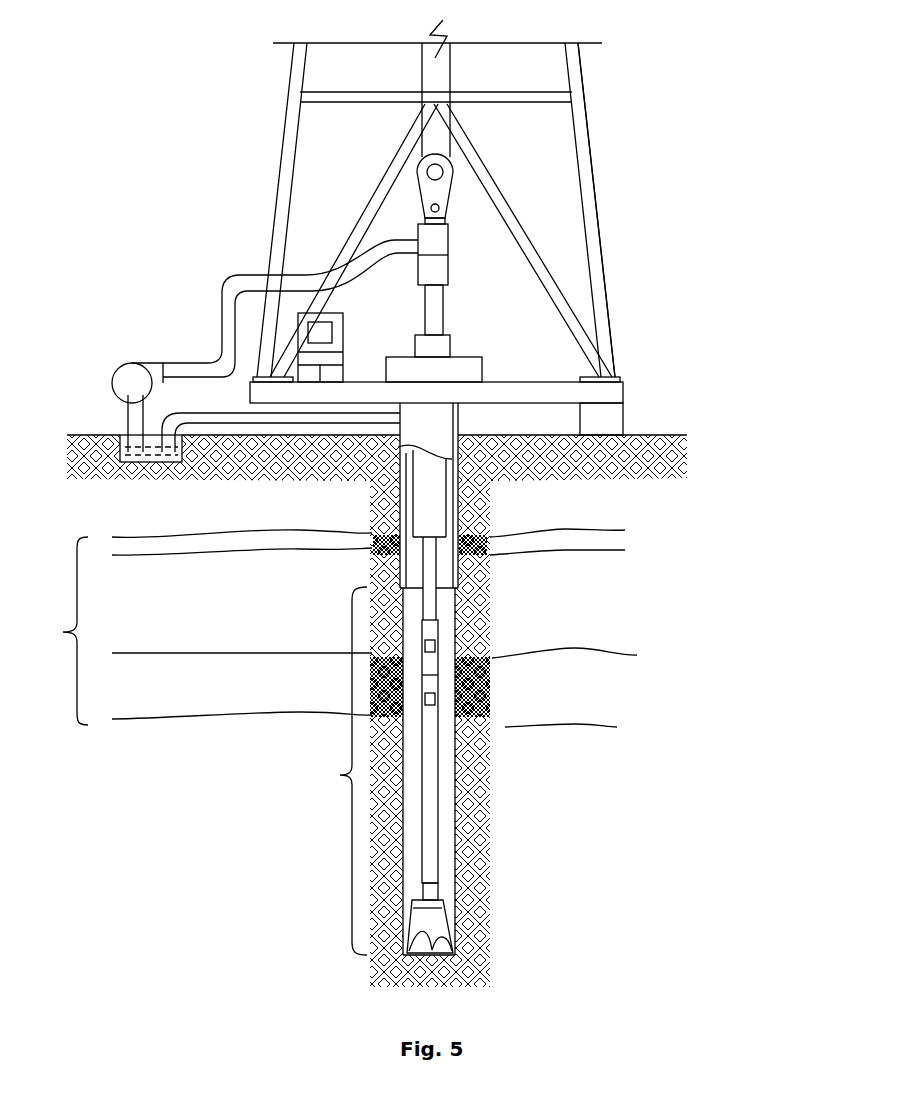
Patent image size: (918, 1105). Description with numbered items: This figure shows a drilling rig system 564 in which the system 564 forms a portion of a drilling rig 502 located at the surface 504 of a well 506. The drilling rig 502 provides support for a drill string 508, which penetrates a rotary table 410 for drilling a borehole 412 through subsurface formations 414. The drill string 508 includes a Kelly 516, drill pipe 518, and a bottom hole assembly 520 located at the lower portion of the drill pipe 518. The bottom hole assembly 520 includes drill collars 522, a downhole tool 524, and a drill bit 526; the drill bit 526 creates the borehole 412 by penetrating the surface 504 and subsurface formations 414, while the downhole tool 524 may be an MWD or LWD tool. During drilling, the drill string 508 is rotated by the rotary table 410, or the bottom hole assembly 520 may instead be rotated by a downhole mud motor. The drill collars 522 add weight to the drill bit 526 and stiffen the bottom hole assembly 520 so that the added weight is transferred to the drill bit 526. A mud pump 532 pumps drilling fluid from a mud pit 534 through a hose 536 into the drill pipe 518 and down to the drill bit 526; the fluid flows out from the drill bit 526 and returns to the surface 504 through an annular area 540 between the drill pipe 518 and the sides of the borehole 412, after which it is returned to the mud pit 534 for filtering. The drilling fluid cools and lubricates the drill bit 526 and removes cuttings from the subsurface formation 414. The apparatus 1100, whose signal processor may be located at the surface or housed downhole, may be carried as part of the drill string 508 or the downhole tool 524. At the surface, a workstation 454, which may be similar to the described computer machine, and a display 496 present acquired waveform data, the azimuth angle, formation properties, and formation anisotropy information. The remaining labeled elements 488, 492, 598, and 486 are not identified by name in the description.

The drilling rig system 564 is at (212, 150).
The derrick 488 is at (582, 120).
The drilling rig 502 is at (606, 220).
The hose 536 is at (232, 275).
The mud pump 532 is at (143, 362).
The mud pit 534 is at (137, 462).
The control unit 492 is at (336, 308).
The workstation 454 is at (345, 336).
The display 496 is at (332, 334).
The rotary table 410 is at (402, 357).
The Kelly 516 is at (443, 305).
The kelly bushing 598 is at (450, 343).
The drilling platform 486 is at (625, 385).
The surface 504 is at (673, 435).
The well 506 is at (470, 430).
The drill collars 522 is at (446, 503).
The drill pipe 518 is at (432, 568).
The annular area 540 is at (512, 739).
The apparatus 1100 is at (436, 647).
The drill string 508 is at (450, 780).
The borehole 412 is at (455, 838).
The downhole tool 524 is at (430, 867).
The drill bit 526 is at (437, 920).
The bottom hole assembly 520 is at (332, 771).
The subsurface formations 414 is at (331, 628).